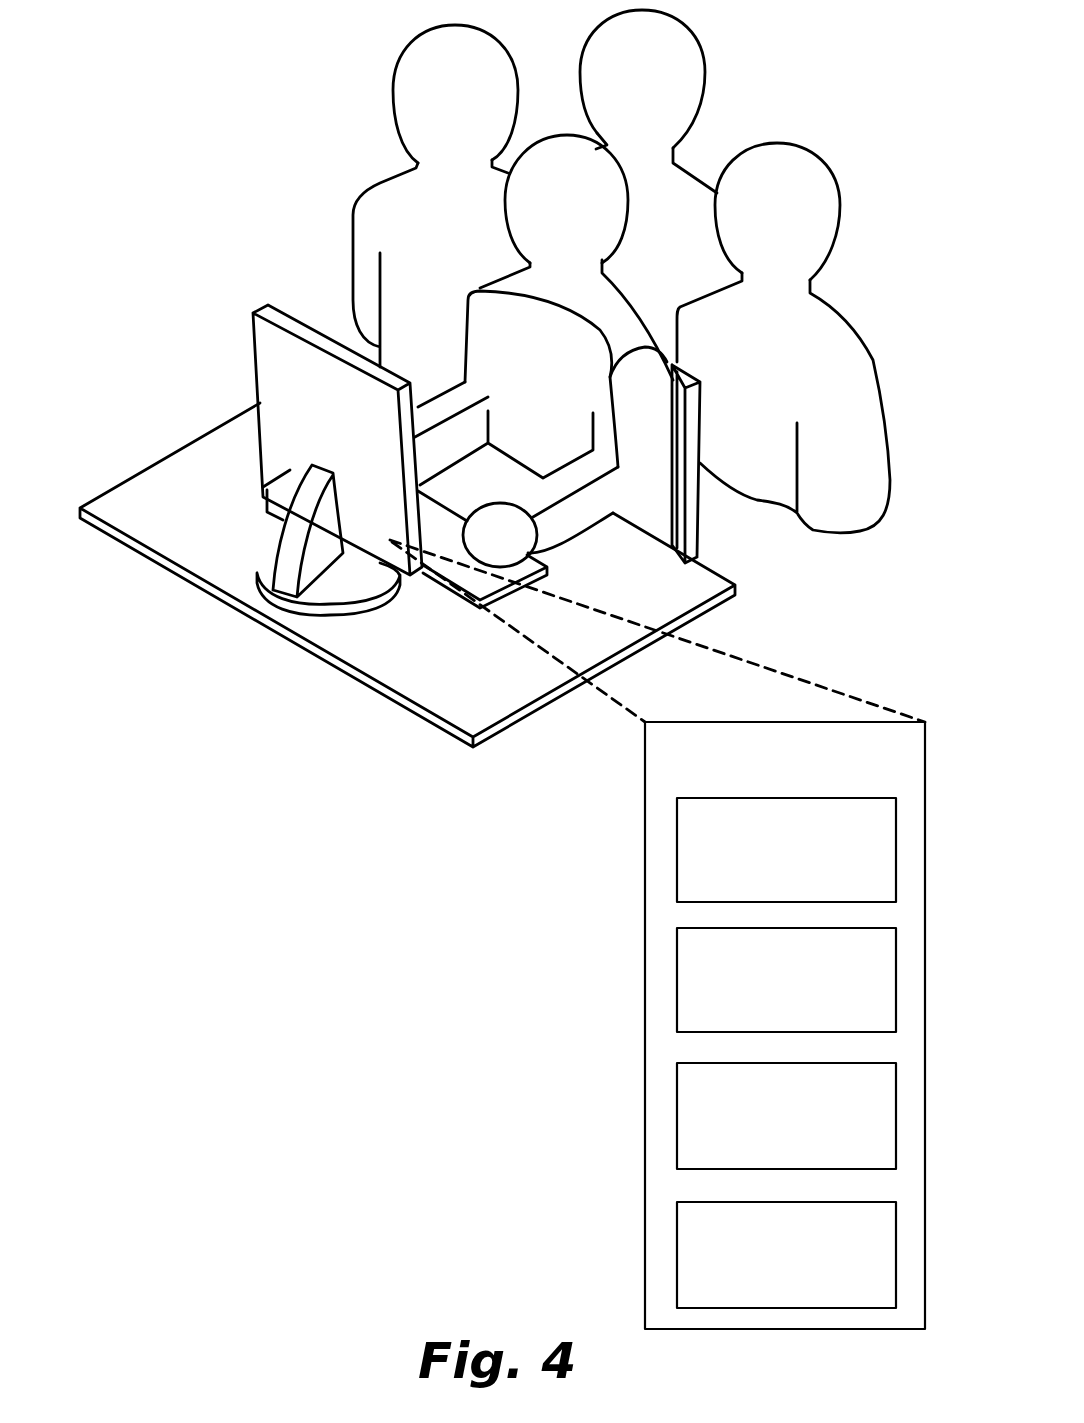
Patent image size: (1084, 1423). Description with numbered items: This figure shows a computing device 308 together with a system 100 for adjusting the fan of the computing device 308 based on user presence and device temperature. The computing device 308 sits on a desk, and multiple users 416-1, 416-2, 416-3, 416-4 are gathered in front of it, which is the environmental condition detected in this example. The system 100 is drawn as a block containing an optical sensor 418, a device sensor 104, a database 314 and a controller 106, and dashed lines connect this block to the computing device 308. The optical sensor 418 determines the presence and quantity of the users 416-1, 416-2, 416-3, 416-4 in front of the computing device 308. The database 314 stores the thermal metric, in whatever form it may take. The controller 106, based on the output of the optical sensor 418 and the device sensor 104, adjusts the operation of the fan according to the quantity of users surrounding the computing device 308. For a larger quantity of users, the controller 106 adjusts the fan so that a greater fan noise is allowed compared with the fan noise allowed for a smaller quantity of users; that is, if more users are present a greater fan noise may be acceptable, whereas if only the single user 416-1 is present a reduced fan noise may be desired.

The computing device 308 is at (290, 472).
The user 416-1 is at (480, 335).
The user 416-2 is at (410, 197).
The user 416-3 is at (685, 73).
The user 416-4 is at (852, 513).
The system 100 is at (785, 1025).
The optical sensor 418 is at (786, 850).
The device sensor 104 is at (786, 980).
The database 314 is at (786, 1116).
The controller 106 is at (786, 1255).